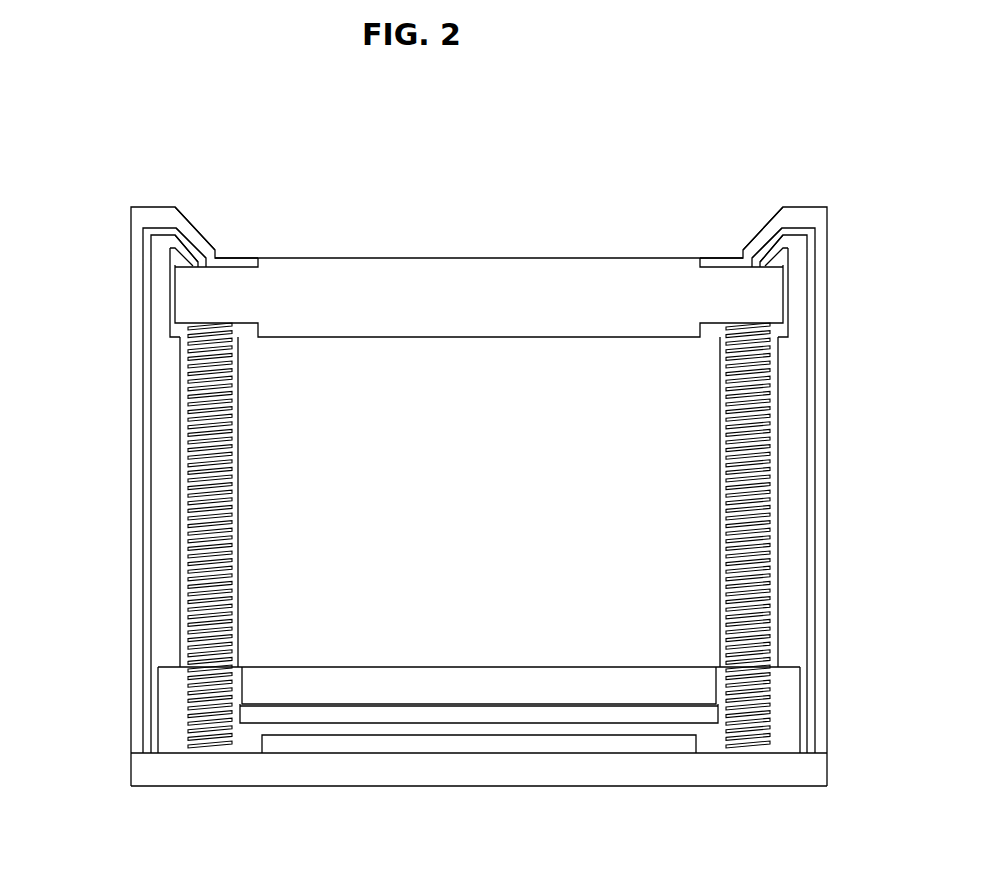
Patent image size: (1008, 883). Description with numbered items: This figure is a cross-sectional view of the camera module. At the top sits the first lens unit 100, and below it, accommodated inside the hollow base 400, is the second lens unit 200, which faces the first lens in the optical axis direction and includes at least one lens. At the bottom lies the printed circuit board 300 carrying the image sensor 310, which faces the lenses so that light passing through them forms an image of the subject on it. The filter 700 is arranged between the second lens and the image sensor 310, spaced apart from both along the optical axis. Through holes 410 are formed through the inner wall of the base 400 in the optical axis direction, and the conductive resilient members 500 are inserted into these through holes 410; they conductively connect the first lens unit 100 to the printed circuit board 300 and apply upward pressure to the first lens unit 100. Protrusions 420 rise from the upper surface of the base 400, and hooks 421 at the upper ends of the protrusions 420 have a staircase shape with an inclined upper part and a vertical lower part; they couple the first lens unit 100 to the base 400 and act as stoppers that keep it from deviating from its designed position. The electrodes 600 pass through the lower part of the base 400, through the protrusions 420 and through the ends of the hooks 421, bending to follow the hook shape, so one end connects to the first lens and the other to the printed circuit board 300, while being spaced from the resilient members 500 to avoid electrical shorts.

The first lens unit 100 is at (493, 283).
The second lens unit 200 is at (643, 578).
The printed circuit board 300 is at (327, 772).
The image sensor 310 is at (425, 745).
The base 400 is at (121, 578).
The through hole 410 is at (187, 498).
The protrusion 420 is at (155, 207).
The hook 421 is at (200, 228).
The resilient member 500 is at (187, 448).
The electrode 600 is at (147, 386).
The filter 700 is at (553, 715).